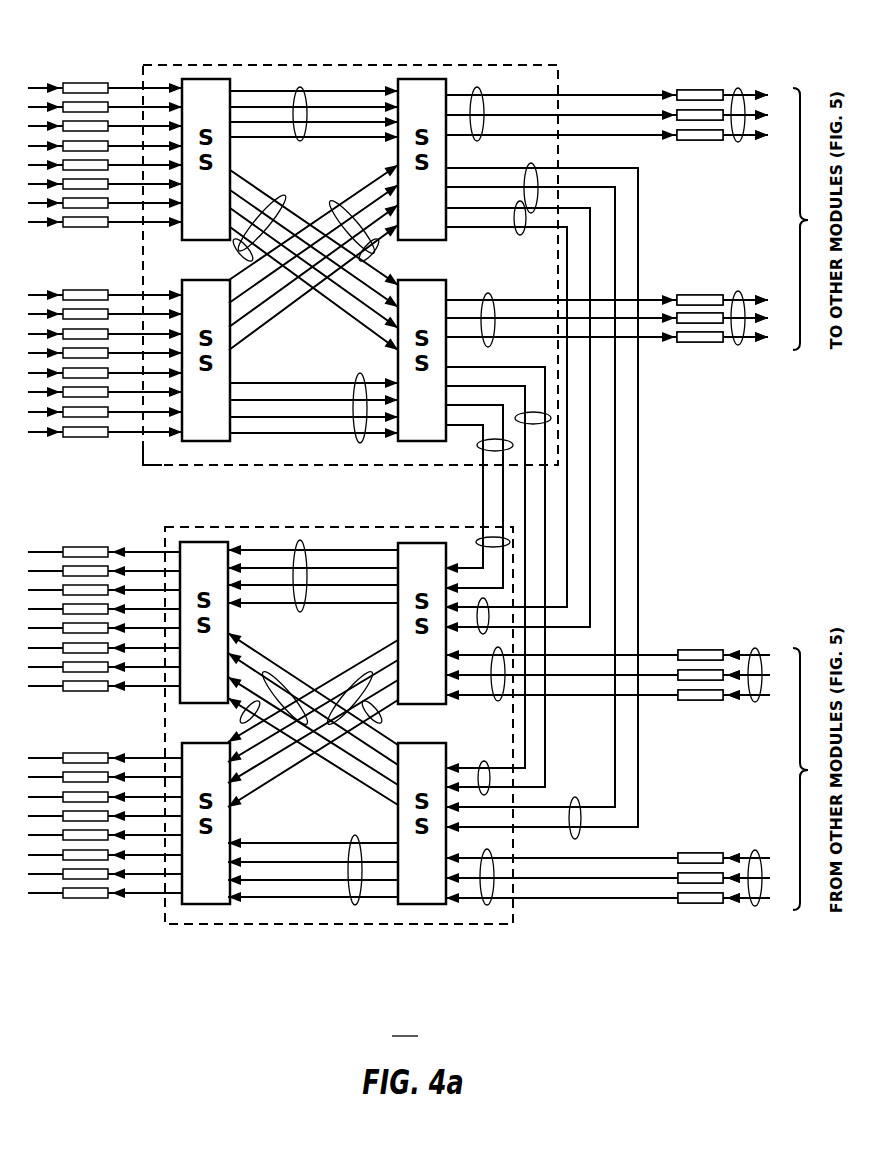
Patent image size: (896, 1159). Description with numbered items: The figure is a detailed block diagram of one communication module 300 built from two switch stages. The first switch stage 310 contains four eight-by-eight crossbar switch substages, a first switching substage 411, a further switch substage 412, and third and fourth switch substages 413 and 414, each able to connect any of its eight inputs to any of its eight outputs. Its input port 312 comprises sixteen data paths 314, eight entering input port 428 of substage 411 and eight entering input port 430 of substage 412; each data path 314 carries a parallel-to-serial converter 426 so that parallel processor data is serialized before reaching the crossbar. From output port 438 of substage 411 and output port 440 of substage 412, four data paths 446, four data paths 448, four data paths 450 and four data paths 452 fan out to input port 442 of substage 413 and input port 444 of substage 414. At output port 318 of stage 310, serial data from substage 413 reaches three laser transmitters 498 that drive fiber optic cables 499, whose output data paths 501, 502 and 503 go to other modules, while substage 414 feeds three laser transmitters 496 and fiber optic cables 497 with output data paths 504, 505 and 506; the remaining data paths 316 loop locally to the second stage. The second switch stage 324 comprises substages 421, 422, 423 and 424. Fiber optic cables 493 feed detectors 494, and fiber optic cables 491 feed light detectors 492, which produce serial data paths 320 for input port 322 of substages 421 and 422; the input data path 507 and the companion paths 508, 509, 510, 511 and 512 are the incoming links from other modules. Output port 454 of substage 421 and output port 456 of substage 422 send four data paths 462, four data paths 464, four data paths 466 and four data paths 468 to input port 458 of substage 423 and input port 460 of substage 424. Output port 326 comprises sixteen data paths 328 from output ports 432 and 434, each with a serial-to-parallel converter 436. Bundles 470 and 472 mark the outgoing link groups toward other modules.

The module 300 is at (405, 1025).
The first switch stage 310 is at (340, 65).
The input port 312 is at (128, 68).
The data paths 314 is at (38, 87).
The data paths 316 is at (477, 87).
The output port 318 is at (462, 248).
The data paths 320 is at (485, 943).
The input port 322 is at (546, 734).
The switch stage 324 is at (314, 925).
The output port 326 is at (148, 543).
The data paths 328 is at (40, 552).
The first switching substage 411 is at (200, 79).
The further switch substage 412 is at (210, 442).
The third switch substage 413 is at (425, 79).
The fourth switch substage 414 is at (411, 443).
The first switch substage 421 is at (410, 543).
The second switch substage 422 is at (420, 905).
The third switch substage 423 is at (200, 542).
The fourth switch substage 424 is at (210, 903).
The parallel-to-serial converter 426 is at (88, 83).
The input port 428 is at (160, 240).
The input port 430 is at (148, 444).
The output port 432 is at (163, 712).
The output port 434 is at (158, 745).
The serial-to-parallel converter 436 is at (86, 548).
The output port 438 is at (245, 78).
The output port 440 is at (240, 372).
The input port 442 is at (372, 76).
The input port 444 is at (363, 354).
The data paths 446 is at (300, 88).
The data paths 448 is at (285, 195).
The data paths 450 is at (340, 198).
The data paths 452 is at (333, 437).
The output port 454 is at (372, 540).
The output port 456 is at (385, 912).
The input port 458 is at (240, 530).
The input port 460 is at (247, 828).
The data paths 462 is at (300, 540).
The data paths 464 is at (340, 668).
The data paths 466 is at (293, 667).
The data paths 468 is at (283, 897).
The output links to other modules 470 is at (614, 134).
The output links to other modules 472 is at (657, 298).
The fiber optic cables 491 is at (752, 903).
The light detectors 492 is at (700, 855).
The fiber optic cables 493 is at (755, 702).
The detectors 494 is at (693, 700).
The laser transmitters 496 is at (690, 296).
The fiber optic cables 497 is at (733, 293).
The laser transmitters 498 is at (695, 89).
The fiber optic cables 499 is at (737, 141).
The first output data path 501 is at (762, 90).
The second output data path 502 is at (760, 118).
The third output data path 503 is at (755, 141).
The first output data path 504 is at (770, 298).
The second output data path 505 is at (765, 340).
The third output data path 506 is at (738, 346).
The input data path 507 is at (728, 652).
The input link from other module 508 is at (765, 672).
The input link from other module 509 is at (768, 696).
The input link from other module 510 is at (735, 855).
The input link from other module 511 is at (762, 878).
The input link from other module 512 is at (767, 900).